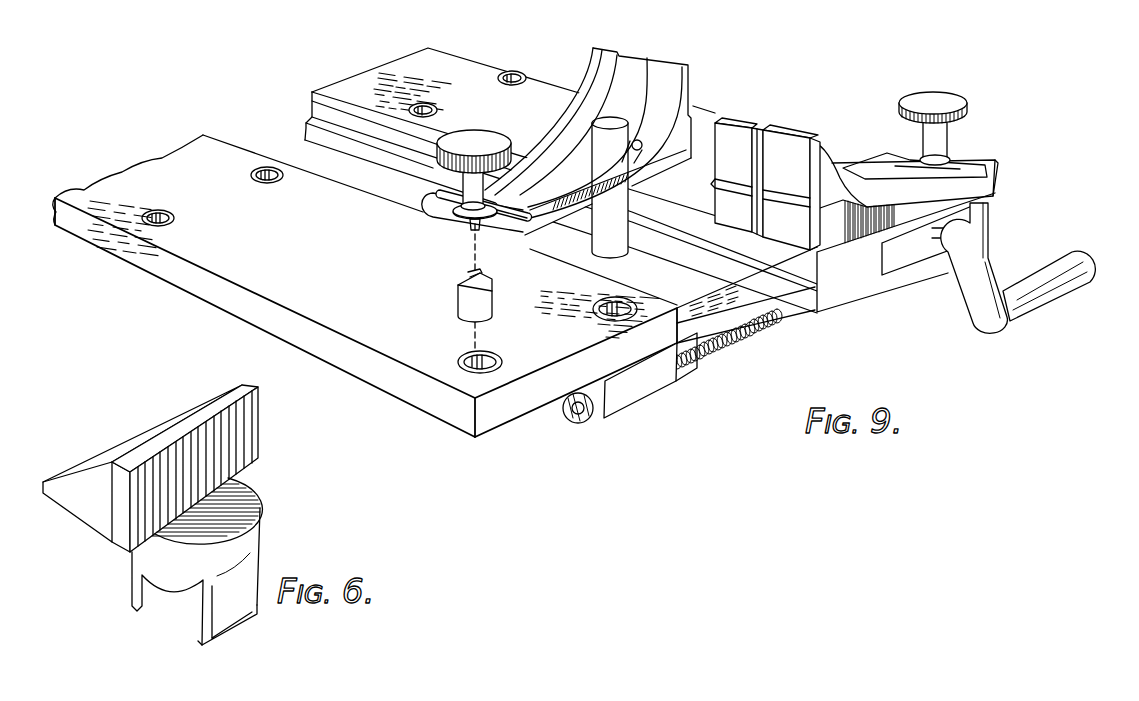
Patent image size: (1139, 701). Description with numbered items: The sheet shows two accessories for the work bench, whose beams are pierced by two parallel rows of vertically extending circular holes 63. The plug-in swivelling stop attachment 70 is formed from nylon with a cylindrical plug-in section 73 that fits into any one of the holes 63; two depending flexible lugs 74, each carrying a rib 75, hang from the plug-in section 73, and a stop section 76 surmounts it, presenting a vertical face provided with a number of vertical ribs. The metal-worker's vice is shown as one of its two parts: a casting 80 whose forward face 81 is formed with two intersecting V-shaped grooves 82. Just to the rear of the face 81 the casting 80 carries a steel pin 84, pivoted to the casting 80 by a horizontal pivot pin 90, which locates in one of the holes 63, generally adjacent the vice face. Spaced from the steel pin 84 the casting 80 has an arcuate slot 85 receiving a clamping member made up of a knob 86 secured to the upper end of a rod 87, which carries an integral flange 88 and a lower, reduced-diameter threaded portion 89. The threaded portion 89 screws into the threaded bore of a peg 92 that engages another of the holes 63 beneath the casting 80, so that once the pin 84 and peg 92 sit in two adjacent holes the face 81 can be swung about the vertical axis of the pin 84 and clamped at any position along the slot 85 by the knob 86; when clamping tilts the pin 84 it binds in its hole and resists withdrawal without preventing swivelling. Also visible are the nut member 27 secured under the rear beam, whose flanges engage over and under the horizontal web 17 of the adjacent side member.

In FIG. 9, the circular holes 63 is at (258, 174).
In FIG. 9, the casting 80 is at (693, 83).
In FIG. 9, the forward face 81 is at (786, 157).
In FIG. 9, the V shaped grooves 82 is at (756, 138).
In FIG. 9, the steel pin 84 is at (614, 242).
In FIG. 9, the arcuate slot 85 is at (503, 213).
In FIG. 9, the knob 86 is at (492, 138).
In FIG. 9, the rod 87 is at (437, 193).
In FIG. 9, the integral flange 88 is at (457, 212).
In FIG. 9, the threaded portion 89 is at (476, 237).
In FIG. 9, the horizontal pivot pin 90 is at (646, 143).
In FIG. 9, the peg 92 is at (480, 305).
In FIG. 9, the horizontal web 17 is at (688, 320).
In FIG. 9, the nut member 27 is at (640, 383).
In FIG. 6, the swivel type stop attachment 70 is at (82, 504).
In FIG. 6, the cylindrical plug-in section 73 is at (250, 532).
In FIG. 6, the flexible lugs 74 is at (247, 571).
In FIG. 6, the rib 75 is at (240, 628).
In FIG. 6, the stop section 76 is at (258, 438).